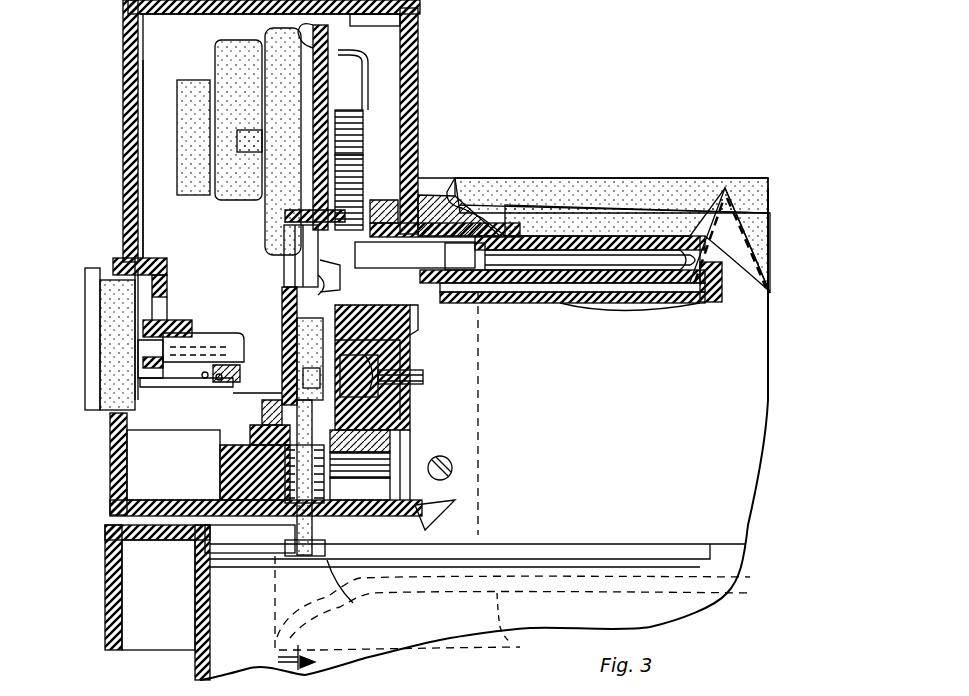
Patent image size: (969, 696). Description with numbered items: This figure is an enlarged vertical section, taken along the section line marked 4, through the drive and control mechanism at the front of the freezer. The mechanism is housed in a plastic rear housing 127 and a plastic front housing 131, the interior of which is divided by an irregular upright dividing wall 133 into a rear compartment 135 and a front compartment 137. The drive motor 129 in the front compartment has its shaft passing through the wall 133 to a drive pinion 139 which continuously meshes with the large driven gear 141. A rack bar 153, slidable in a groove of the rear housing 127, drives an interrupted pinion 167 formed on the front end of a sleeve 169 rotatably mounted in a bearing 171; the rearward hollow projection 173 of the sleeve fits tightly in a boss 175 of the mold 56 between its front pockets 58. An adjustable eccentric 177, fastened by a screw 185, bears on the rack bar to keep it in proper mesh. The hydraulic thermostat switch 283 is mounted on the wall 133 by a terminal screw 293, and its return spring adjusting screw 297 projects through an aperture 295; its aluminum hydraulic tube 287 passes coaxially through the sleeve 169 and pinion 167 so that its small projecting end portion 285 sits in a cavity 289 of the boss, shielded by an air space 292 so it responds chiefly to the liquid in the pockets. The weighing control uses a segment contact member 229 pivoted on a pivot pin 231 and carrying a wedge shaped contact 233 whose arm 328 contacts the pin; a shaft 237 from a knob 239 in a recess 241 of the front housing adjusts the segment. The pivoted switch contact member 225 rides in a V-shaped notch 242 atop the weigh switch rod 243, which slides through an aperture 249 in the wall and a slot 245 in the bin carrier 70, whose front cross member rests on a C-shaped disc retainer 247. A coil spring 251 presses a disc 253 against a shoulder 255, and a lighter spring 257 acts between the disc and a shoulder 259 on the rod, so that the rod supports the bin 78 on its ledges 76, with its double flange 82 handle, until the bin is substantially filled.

The mold 56 is at (752, 212).
The front pockets 58 is at (770, 286).
The bin carrier 70 is at (455, 514).
The supporting ledges 76 is at (515, 624).
The bin 78 is at (198, 645).
The double flange 82 is at (118, 638).
The rear housing 127 is at (405, 62).
The drive motor 129 is at (230, 54).
The front housing 131 is at (128, 92).
The upright dividing wall 133 is at (284, 304).
The rear compartment 135 is at (352, 30).
The front compartment 137 is at (150, 152).
The drive pinion 139 is at (345, 135).
The large driven gear 141 is at (348, 195).
The rack bar 153 is at (420, 328).
The interrupted pinion 167 is at (372, 215).
The sleeve 169 is at (430, 190).
The bearing 171 is at (412, 305).
The hollow projection 173 is at (500, 292).
The boss 175 is at (605, 303).
The adjustable eccentric 177 is at (405, 430).
The screw 185 is at (424, 378).
The pivoted switch contact member 225 is at (303, 380).
The segment contact member 229 is at (363, 443).
The pivot pin 231 is at (284, 292).
The wedge shaped contact 233 is at (270, 394).
The shaft 237 is at (215, 337).
The knob 239 is at (105, 400).
The recess 241 is at (165, 322).
The V-shaped notch 242 is at (240, 336).
The weigh switch rod 243 is at (300, 556).
The slot 245 is at (275, 556).
The C-shaped disc retainer 247 is at (359, 591).
The aperture 249 is at (325, 512).
The coil spring 251 is at (290, 520).
The disc 253 is at (363, 465).
The shoulder 255 is at (272, 458).
The light coil spring 257 is at (290, 438).
The shoulder 259 is at (298, 418).
The hydraulic thermostat switch 283 is at (575, 237).
The projecting end portion 285 is at (660, 256).
The hydraulic tube 287 is at (500, 243).
The cavity 289 is at (595, 250).
The air space 292 is at (690, 292).
The terminal screw 293 is at (276, 200).
The aperture 295 is at (284, 272).
The return spring adjusting screw 297 is at (286, 240).
The arm 328 is at (415, 255).
The section line 4 is at (279, 657).